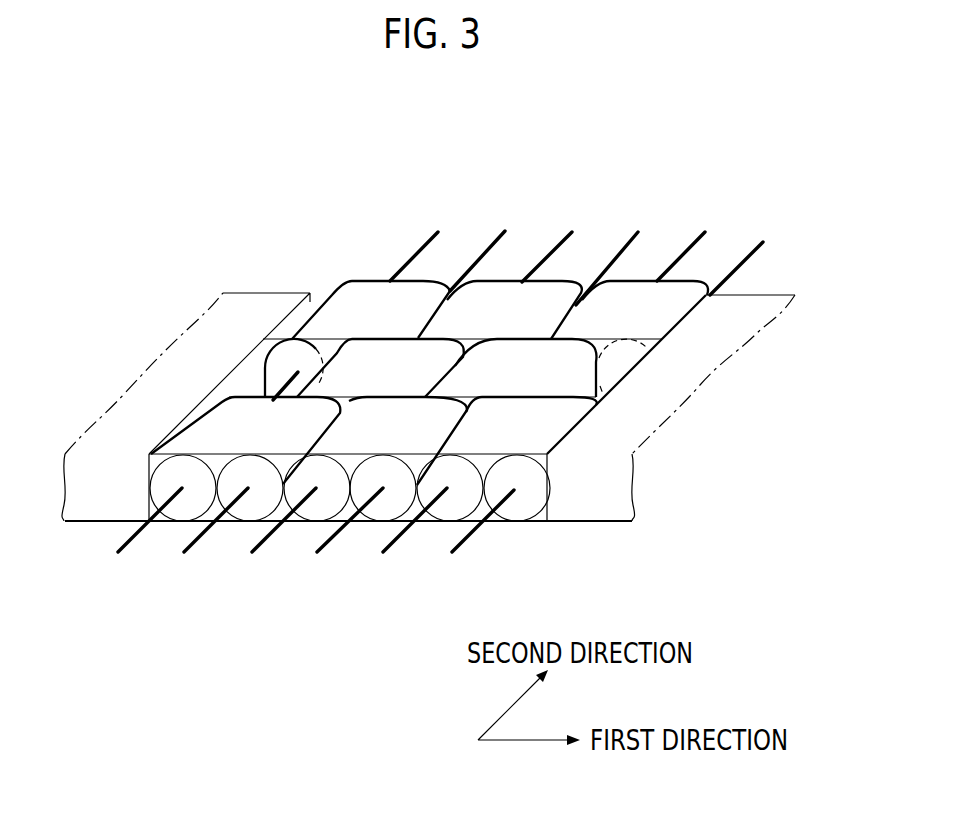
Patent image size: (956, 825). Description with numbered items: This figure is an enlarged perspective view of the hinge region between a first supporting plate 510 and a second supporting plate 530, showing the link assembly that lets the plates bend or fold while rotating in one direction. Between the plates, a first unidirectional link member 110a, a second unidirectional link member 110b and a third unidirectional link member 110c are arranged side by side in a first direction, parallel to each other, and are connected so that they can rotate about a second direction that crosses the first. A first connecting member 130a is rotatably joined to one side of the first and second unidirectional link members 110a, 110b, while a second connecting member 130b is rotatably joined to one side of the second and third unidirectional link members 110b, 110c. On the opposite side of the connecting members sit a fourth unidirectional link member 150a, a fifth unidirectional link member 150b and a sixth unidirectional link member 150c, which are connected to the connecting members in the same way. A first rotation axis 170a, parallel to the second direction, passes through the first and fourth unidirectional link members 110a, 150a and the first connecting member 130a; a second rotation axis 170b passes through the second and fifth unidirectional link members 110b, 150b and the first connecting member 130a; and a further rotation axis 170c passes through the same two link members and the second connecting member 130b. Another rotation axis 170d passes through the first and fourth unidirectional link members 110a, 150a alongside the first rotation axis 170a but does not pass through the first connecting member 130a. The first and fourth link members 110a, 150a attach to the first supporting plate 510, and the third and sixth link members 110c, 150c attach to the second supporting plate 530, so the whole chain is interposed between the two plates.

The first supporting plate 510 is at (122, 413).
The second supporting plate 530 is at (765, 298).
The first unidirectional link member 110a is at (225, 418).
The second unidirectional link member 110b is at (373, 438).
The third unidirectional link member 110c is at (507, 442).
The first connecting member 130a is at (327, 380).
The second connecting member 130b is at (540, 377).
The fourth unidirectional link member 150a is at (368, 292).
The fifth unidirectional link member 150b is at (505, 292).
The sixth unidirectional link member 150c is at (647, 292).
The first rotation axis 170a is at (198, 552).
The second rotation axis 170b is at (267, 552).
The 2-1-th rotation axis 170c is at (333, 552).
The 1-1-th rotation axis 170d is at (132, 552).